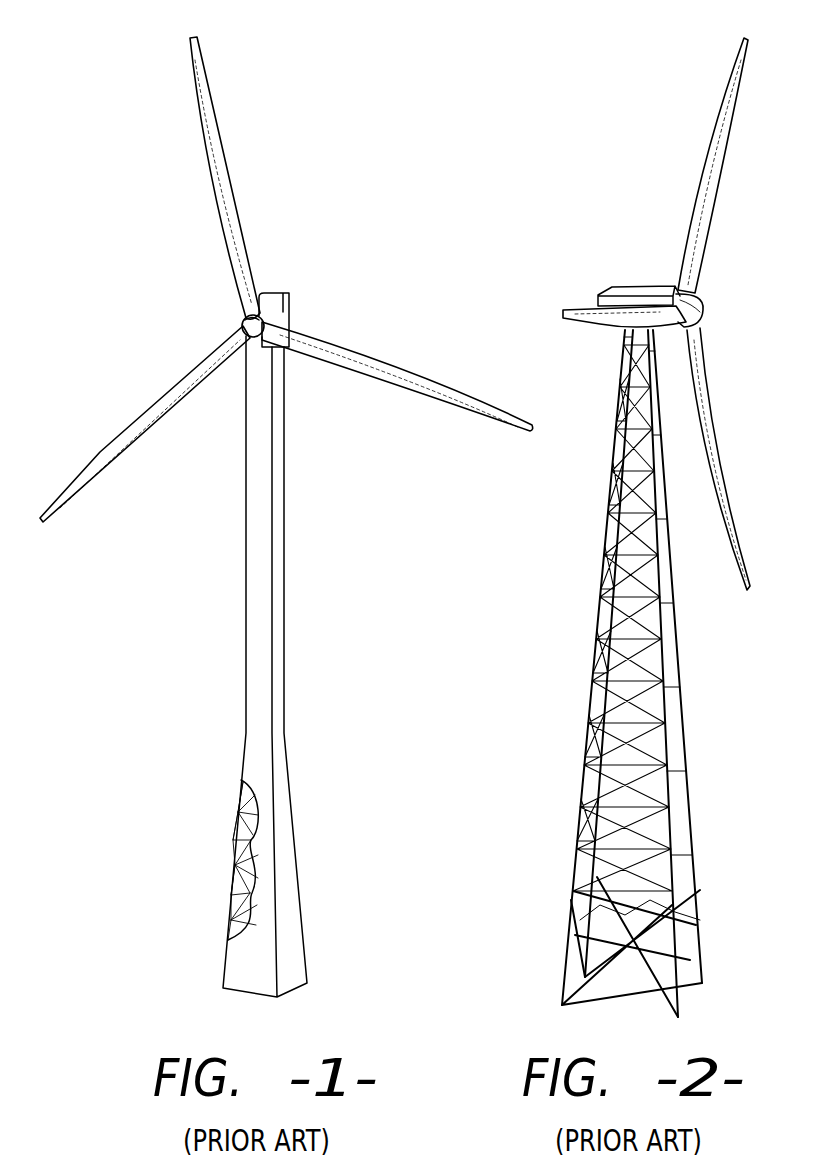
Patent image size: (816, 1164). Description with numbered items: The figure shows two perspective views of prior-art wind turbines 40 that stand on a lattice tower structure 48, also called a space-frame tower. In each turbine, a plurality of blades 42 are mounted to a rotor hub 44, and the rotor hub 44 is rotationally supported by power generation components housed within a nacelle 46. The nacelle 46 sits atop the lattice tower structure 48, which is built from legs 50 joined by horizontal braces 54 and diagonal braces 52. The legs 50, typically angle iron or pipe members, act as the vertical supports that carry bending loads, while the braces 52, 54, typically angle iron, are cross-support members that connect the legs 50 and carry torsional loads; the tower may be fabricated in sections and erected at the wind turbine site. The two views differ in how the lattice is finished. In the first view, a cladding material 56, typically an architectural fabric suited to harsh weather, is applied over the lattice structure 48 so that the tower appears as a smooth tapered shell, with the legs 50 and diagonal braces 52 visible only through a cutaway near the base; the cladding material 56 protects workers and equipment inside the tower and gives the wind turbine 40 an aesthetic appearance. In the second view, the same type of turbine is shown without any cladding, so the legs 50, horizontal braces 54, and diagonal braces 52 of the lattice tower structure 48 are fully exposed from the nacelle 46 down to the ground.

In FIG. 1, the wind turbine 40 is at (286, 517).
In FIG. 2, the wind turbine 40 is at (632, 527).
In FIG. 1, the blade 42 is at (217, 108).
In FIG. 2, the blade 42 is at (720, 110).
In FIG. 1, the rotor hub 44 is at (240, 323).
In FIG. 2, the rotor hub 44 is at (705, 313).
In FIG. 1, the nacelle 46 is at (288, 308).
In FIG. 2, the nacelle 46 is at (632, 290).
In FIG. 1, the lattice tower structure 48 is at (276, 666).
In FIG. 2, the lattice tower structure 48 is at (632, 673).
In FIG. 1, the leg 50 is at (217, 860).
In FIG. 2, the leg 50 is at (576, 840).
In FIG. 1, the diagonal brace 52 is at (227, 910).
In FIG. 2, the diagonal brace 52 is at (667, 752).
In FIG. 2, the horizontal brace 54 is at (639, 673).
In FIG. 1, the cladding material 56 is at (258, 663).